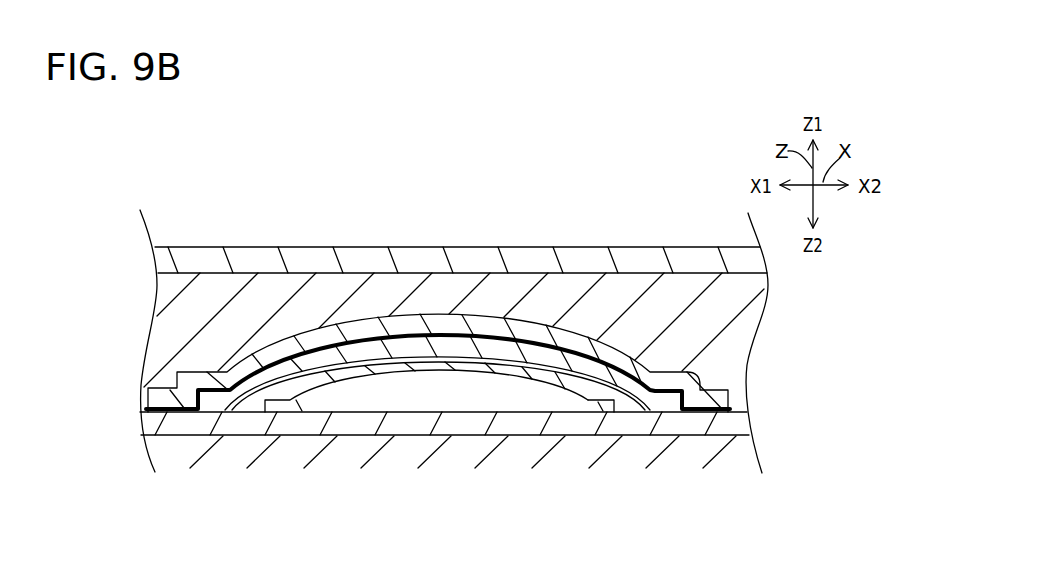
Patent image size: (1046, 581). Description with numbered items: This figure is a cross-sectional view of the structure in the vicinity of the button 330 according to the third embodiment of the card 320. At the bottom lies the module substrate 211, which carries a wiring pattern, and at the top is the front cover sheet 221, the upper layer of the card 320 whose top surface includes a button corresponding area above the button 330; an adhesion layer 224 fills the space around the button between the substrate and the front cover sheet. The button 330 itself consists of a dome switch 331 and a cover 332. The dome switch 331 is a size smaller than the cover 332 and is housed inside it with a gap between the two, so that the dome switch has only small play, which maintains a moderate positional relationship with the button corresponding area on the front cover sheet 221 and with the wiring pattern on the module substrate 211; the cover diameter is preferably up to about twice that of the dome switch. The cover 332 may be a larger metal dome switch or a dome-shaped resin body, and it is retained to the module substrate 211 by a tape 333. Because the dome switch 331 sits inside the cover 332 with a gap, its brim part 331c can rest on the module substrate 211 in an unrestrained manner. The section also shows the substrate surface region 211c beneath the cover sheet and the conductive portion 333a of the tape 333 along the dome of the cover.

The front cover sheet 221 is at (194, 258).
The adhesion layer 224 is at (750, 462).
The module substrate 211 is at (177, 430).
The substrate surface 211c is at (501, 242).
The card 320 is at (670, 172).
The button 330 is at (438, 331).
The tape 333 is at (346, 328).
The upper electrode 333a is at (402, 336).
The cover 332 is at (425, 347).
The dome switch 331 is at (343, 382).
The brim part 331c is at (607, 403).